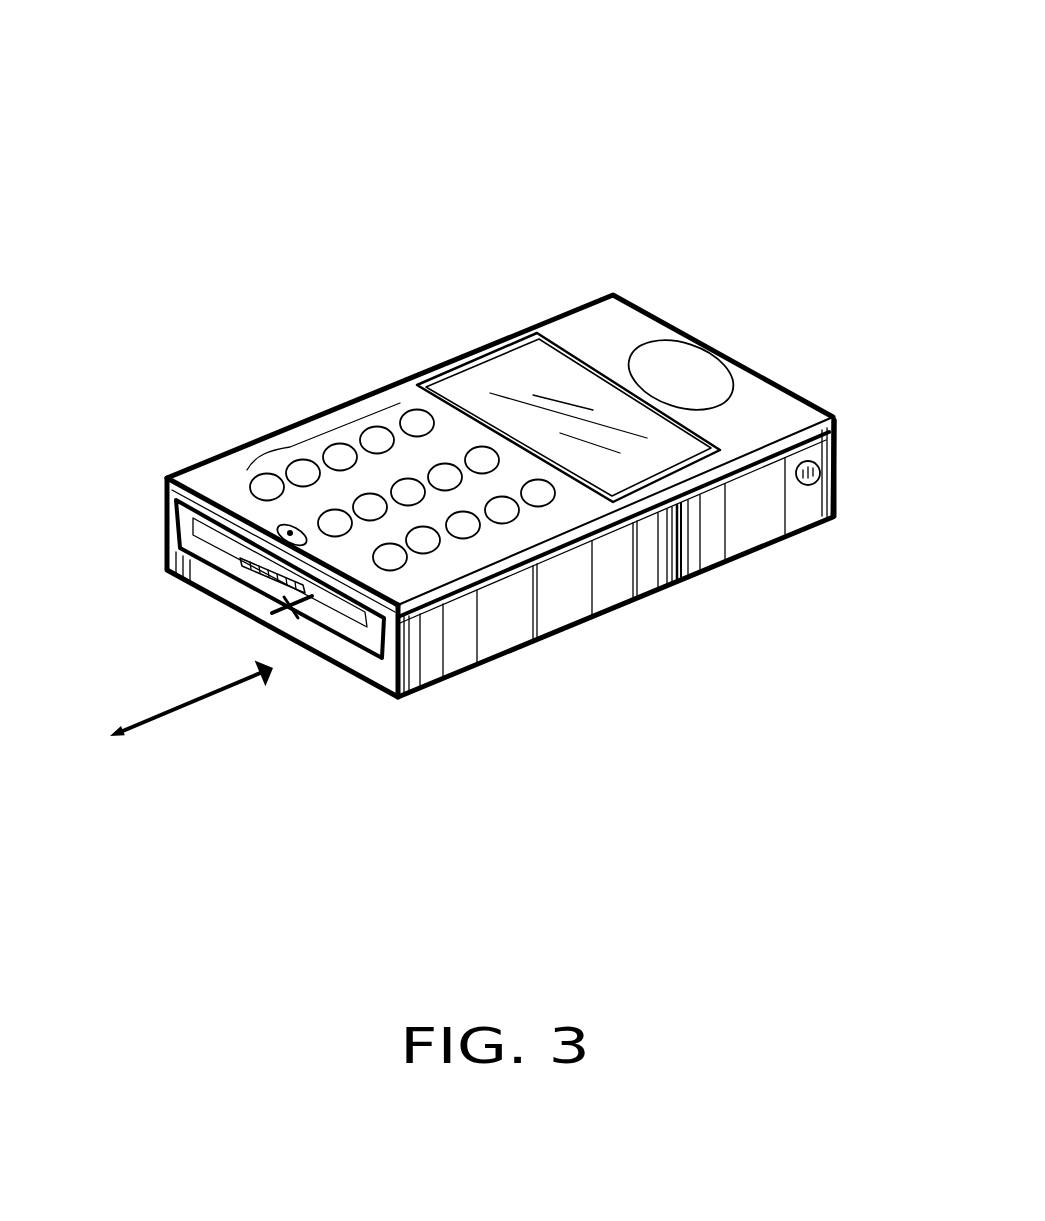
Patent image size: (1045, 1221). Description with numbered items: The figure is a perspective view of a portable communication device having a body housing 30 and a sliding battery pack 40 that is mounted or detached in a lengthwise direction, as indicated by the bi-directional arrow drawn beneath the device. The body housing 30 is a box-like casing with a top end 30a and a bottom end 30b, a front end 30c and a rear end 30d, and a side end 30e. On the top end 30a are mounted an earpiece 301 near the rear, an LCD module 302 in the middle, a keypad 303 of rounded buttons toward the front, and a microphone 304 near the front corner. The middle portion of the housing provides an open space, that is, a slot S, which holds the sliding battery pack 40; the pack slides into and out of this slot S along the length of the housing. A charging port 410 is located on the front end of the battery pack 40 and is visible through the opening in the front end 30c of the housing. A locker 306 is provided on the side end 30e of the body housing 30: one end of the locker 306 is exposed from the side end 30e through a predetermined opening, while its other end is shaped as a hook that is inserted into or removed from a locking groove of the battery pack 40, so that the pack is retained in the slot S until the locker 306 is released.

The body housing 30 is at (452, 345).
The top end 30a is at (607, 330).
The bottom end 30b is at (613, 613).
The front end 30c is at (365, 665).
The rear end 30d is at (838, 450).
The side end 30e is at (697, 547).
The earpiece 301 is at (680, 362).
The LCD module 302 is at (548, 372).
The keypad 303 is at (313, 430).
The microphone 304 is at (278, 527).
The locker 306 is at (813, 485).
The sliding battery pack 40 is at (288, 608).
The charging port 410 is at (235, 558).
The slot S is at (420, 693).